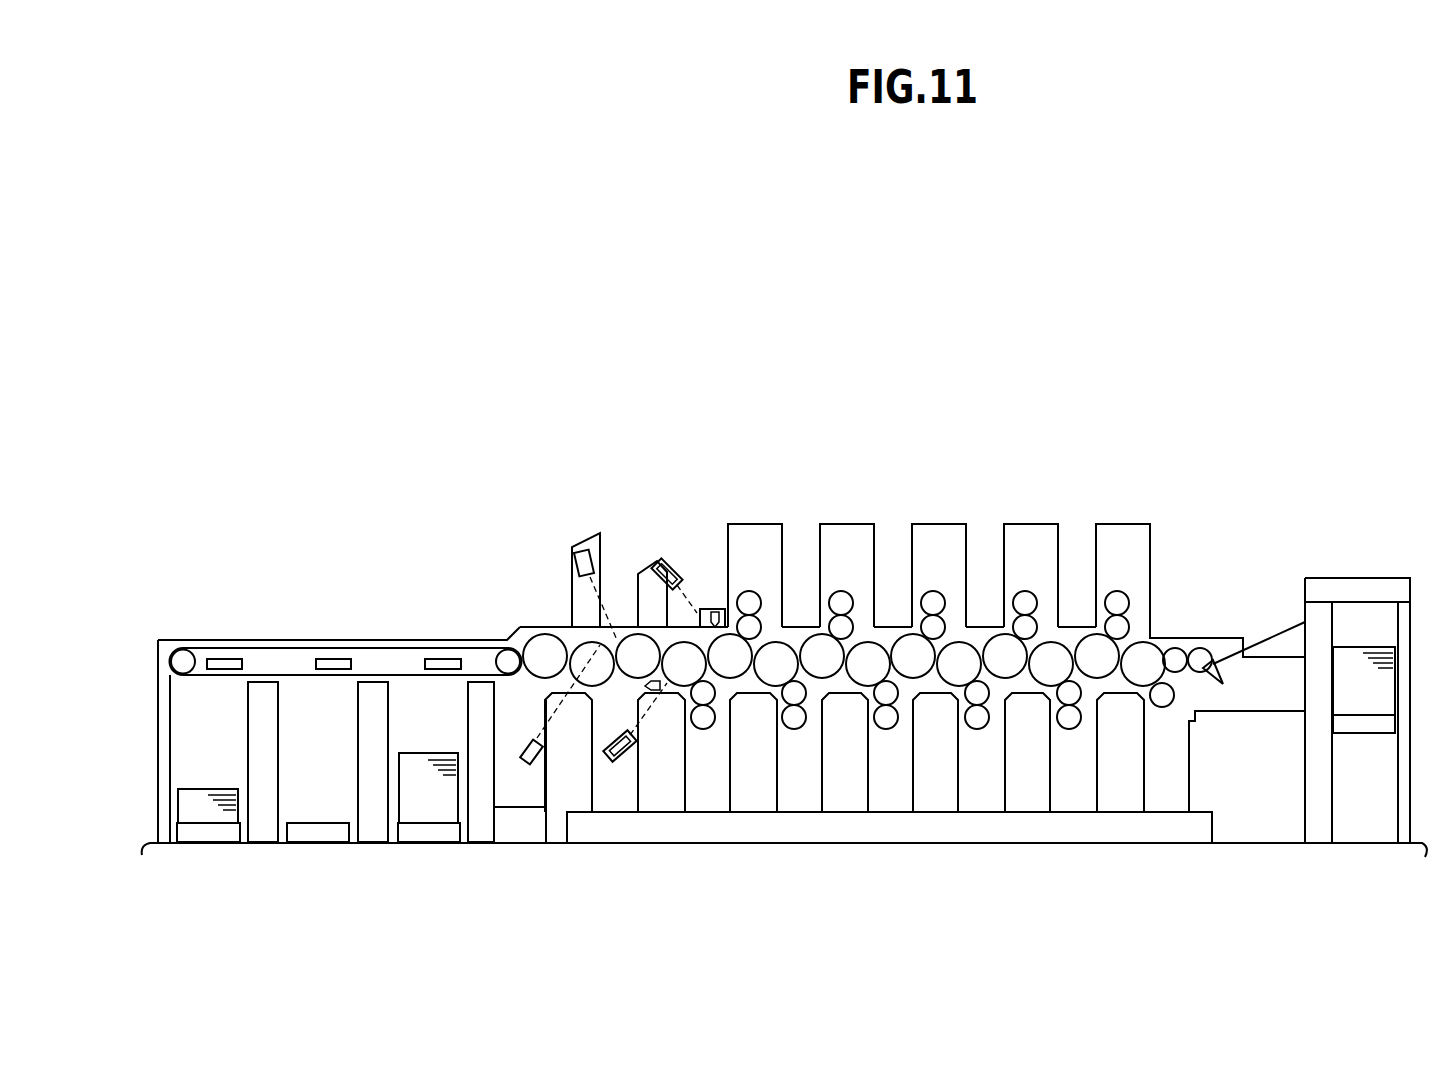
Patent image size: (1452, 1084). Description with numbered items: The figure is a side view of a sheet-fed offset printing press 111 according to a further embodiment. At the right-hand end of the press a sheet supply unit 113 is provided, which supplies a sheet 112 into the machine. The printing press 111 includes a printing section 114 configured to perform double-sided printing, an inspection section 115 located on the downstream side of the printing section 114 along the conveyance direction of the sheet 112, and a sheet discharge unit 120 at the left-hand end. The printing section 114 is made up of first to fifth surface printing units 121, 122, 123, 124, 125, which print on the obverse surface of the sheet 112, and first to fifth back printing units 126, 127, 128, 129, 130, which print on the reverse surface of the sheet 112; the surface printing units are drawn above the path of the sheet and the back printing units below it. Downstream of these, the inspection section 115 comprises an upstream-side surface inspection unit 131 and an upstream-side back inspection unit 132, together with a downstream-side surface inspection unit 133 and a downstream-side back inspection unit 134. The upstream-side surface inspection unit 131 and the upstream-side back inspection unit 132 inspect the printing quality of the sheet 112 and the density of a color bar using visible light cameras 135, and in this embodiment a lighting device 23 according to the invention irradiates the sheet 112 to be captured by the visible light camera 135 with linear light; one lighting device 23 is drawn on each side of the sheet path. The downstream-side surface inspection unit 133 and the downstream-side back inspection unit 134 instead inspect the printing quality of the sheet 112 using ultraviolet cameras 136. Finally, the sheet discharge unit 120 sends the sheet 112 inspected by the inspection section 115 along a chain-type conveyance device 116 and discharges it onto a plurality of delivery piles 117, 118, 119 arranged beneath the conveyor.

The printing press 111 is at (1328, 336).
The sheet 112 is at (1372, 645).
The sheet supply unit 113 is at (1383, 576).
The printing section 114 is at (1148, 415).
The inspection section 115 is at (559, 447).
The chain-type conveyance device 116 is at (397, 646).
The delivery pile 117 is at (418, 833).
The delivery pile 118 is at (308, 833).
The delivery pile 119 is at (195, 833).
The sheet discharge unit 120 is at (323, 452).
The first surface printing unit 121 is at (1130, 521).
The second surface printing unit 122 is at (1040, 521).
The third surface printing unit 123 is at (945, 521).
The fourth surface printing unit 124 is at (850, 521).
The fifth surface printing unit 125 is at (758, 521).
The first back printing unit 126 is at (1070, 793).
The second back printing unit 127 is at (977, 793).
The third back printing unit 128 is at (885, 793).
The fourth back printing unit 129 is at (793, 793).
The fifth back printing unit 130 is at (702, 793).
The upstream-side surface inspection unit 131 is at (647, 556).
The upstream-side back inspection unit 132 is at (627, 766).
The downstream-side surface inspection unit 133 is at (588, 531).
The downstream-side back inspection unit 134 is at (533, 778).
The visible light camera 135 is at (656, 562).
The ultraviolet camera 136 is at (580, 547).
The lighting device 23 is at (719, 606).